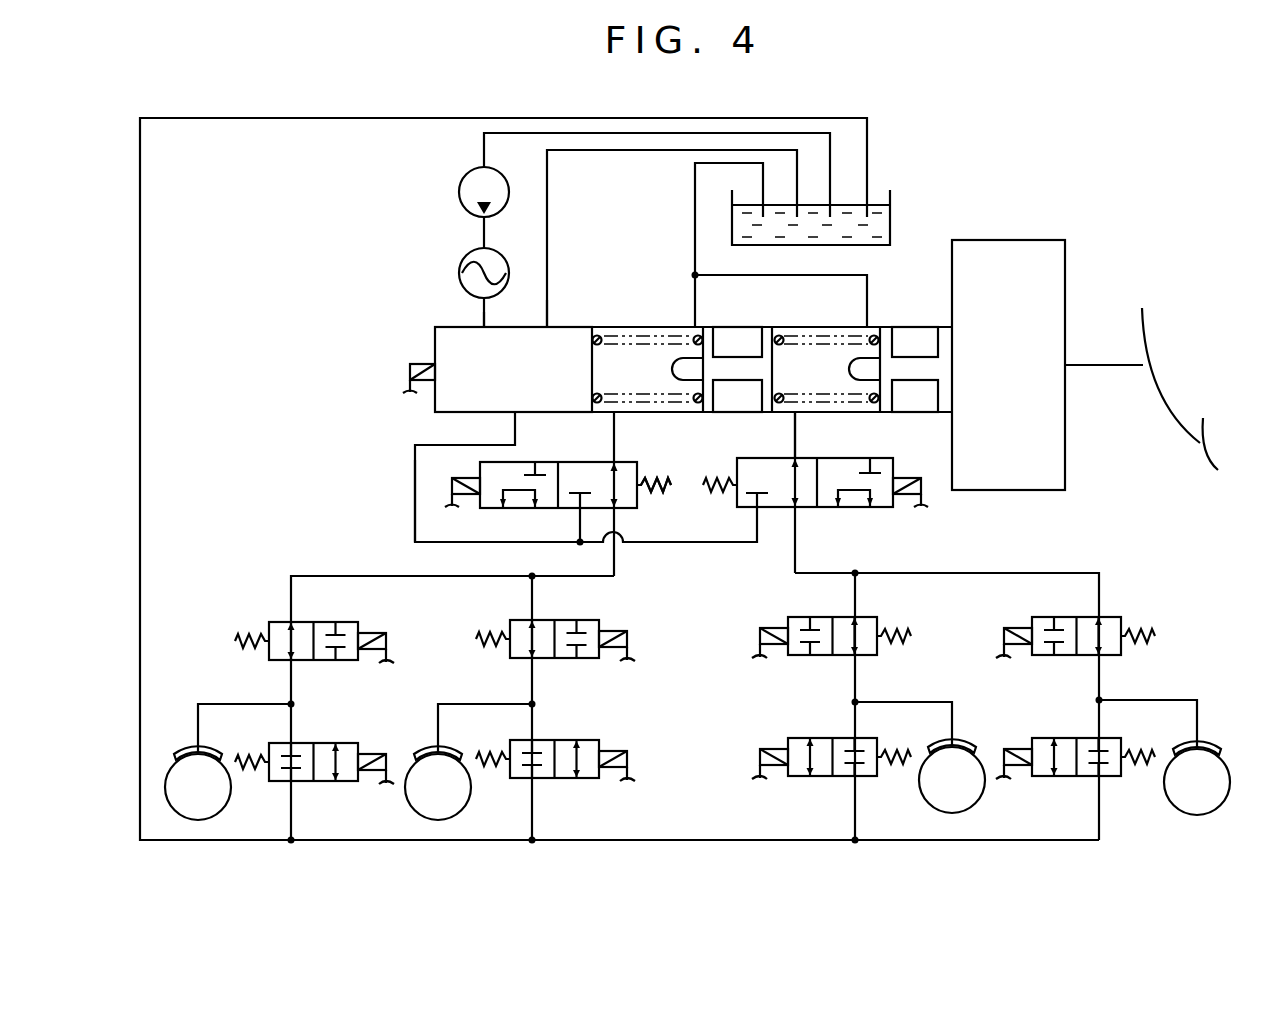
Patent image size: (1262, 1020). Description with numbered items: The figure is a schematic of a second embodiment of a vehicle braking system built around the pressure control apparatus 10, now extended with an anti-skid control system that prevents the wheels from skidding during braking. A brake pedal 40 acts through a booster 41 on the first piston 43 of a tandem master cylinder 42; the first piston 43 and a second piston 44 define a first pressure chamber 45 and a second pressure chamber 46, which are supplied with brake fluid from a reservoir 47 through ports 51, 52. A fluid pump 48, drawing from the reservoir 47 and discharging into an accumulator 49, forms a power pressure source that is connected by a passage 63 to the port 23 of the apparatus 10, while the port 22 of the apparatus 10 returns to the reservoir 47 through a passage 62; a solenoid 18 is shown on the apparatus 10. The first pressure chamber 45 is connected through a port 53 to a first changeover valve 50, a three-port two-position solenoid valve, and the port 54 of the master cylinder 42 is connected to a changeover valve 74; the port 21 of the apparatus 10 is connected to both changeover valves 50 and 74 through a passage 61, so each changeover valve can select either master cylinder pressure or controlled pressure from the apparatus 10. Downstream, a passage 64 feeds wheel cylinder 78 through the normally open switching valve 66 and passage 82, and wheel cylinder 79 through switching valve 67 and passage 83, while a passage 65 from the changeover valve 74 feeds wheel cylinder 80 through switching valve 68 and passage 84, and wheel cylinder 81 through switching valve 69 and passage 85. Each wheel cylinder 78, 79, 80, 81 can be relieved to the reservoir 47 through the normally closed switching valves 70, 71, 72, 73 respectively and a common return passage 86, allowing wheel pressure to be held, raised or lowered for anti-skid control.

The pressure control apparatus 10 is at (437, 400).
The solenoid 18 is at (410, 372).
The port 21 is at (517, 414).
The port 22 is at (552, 322).
The port 23 is at (484, 323).
The brake pedal 40 is at (1147, 340).
The booster 41 is at (1035, 238).
The tandem master cylinder 42 is at (892, 302).
The first piston 43 is at (903, 370).
The second piston 44 is at (733, 368).
The first pressure chamber 45 is at (835, 373).
The second pressure chamber 46 is at (645, 372).
The reservoir 47 is at (877, 203).
The fluid pump 48 is at (472, 181).
The accumulator 49 is at (472, 258).
The first changeover valve 50 is at (878, 508).
The port 51 is at (866, 323).
The port 52 is at (693, 322).
The port 53 is at (792, 413).
The port 54 is at (611, 415).
The passage 61 is at (415, 462).
The passage 62 is at (548, 192).
The passage 63 is at (484, 309).
The passage 64 is at (790, 553).
The passage 65 is at (618, 553).
The normally open switching valve 66 is at (1110, 616).
The switching valve 67 is at (865, 616).
The switching valve 68 is at (567, 620).
The switching valve 69 is at (333, 622).
The normally closed switching valve 70 is at (1082, 738).
The normally closed switching valve 71 is at (815, 738).
The normally closed switching valve 72 is at (588, 740).
The normally closed switching valve 73 is at (325, 743).
The changeover valve 74 is at (638, 502).
The wheel cylinder 78 is at (1208, 748).
The wheel cylinder 79 is at (967, 748).
The wheel cylinder 80 is at (447, 755).
The wheel cylinder 81 is at (206, 760).
The passage 82 is at (1153, 699).
The passage 83 is at (910, 700).
The passage 84 is at (498, 703).
The passage 85 is at (248, 703).
The passage 86 is at (910, 840).